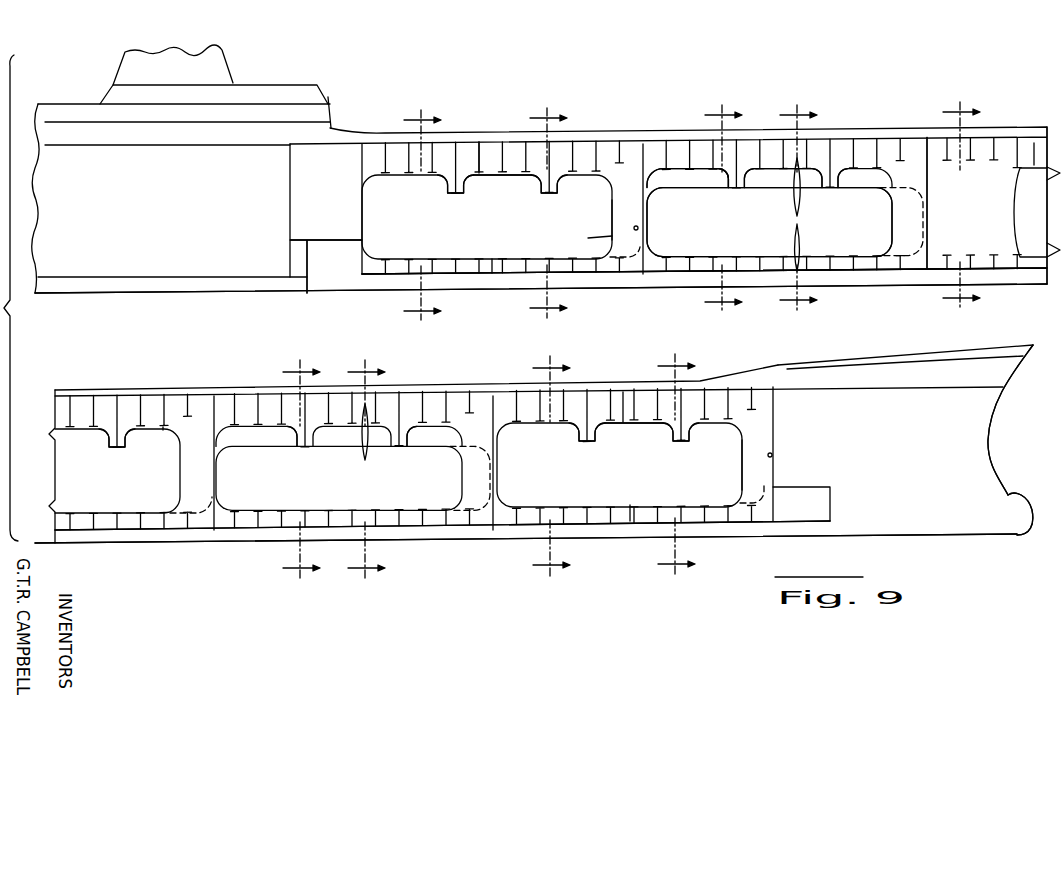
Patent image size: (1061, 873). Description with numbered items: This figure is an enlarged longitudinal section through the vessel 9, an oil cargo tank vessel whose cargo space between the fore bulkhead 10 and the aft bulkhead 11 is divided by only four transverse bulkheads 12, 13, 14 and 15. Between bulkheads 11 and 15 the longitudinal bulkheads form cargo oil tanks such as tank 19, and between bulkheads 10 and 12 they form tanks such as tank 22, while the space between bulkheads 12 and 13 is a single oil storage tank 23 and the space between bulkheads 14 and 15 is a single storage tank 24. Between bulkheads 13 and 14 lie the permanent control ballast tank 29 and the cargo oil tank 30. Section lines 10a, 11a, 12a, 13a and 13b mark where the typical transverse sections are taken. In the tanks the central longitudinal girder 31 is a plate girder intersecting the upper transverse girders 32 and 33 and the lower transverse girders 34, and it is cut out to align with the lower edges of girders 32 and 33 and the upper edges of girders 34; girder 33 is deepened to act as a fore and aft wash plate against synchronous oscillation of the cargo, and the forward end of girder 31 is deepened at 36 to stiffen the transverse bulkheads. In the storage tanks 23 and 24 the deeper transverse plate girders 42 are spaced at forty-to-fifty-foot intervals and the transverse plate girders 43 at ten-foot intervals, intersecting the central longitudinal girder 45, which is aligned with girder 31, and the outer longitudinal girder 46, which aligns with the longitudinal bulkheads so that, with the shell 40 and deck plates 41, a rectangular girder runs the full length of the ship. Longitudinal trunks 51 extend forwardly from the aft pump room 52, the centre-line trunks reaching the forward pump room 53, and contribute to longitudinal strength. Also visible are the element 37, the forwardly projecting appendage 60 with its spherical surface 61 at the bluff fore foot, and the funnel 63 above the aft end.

The vessel 9 is at (239, 301).
The fore bulkhead 10 is at (791, 432).
The section line 10a— 10a is at (414, 217).
The aft bulkhead 11 is at (347, 195).
The section line 11a— 11a is at (292, 470).
The transverse bulkhead 12 is at (506, 466).
The section line 12a— 12a is at (359, 473).
The transverse bulkhead 13 is at (216, 473).
The section line 13a— 13a is at (670, 468).
The section line 13b— 13b is at (952, 212).
The transverse bulkhead 14 is at (928, 216).
The transverse bulkhead 15 is at (646, 212).
The cargo oil tank 19 is at (398, 252).
The cargo oil tank 22 is at (537, 490).
The oil storage tank 23 is at (386, 520).
The oil storage tank 24 is at (696, 244).
The permanent control ballast tank 29 is at (944, 244).
The cargo oil tank 30 is at (1031, 242).
The central longitudinal girder 31 is at (489, 150).
The upper transverse girder 32 is at (522, 168).
The upper transverse girder 33 is at (450, 182).
The lower transverse girder 34 is at (493, 275).
The deepened forward end of longitudinal girder 36 is at (622, 215).
The connection 37 is at (636, 228).
The shell 40 is at (618, 288).
The deck plates 41 is at (652, 138).
The transverse plate girder 42 is at (740, 170).
The transverse plate girder 43 is at (588, 319).
The central longitudinal girder 45 is at (907, 200).
The outer longitudinal girder 46 is at (712, 183).
The longitudinal trunk 51 is at (841, 276).
The aft pump room 52 is at (325, 252).
The forward pump room 53 is at (810, 498).
The appendage 60 is at (1031, 538).
The appendage surface 61 is at (1003, 507).
The funnel 63 is at (221, 70).